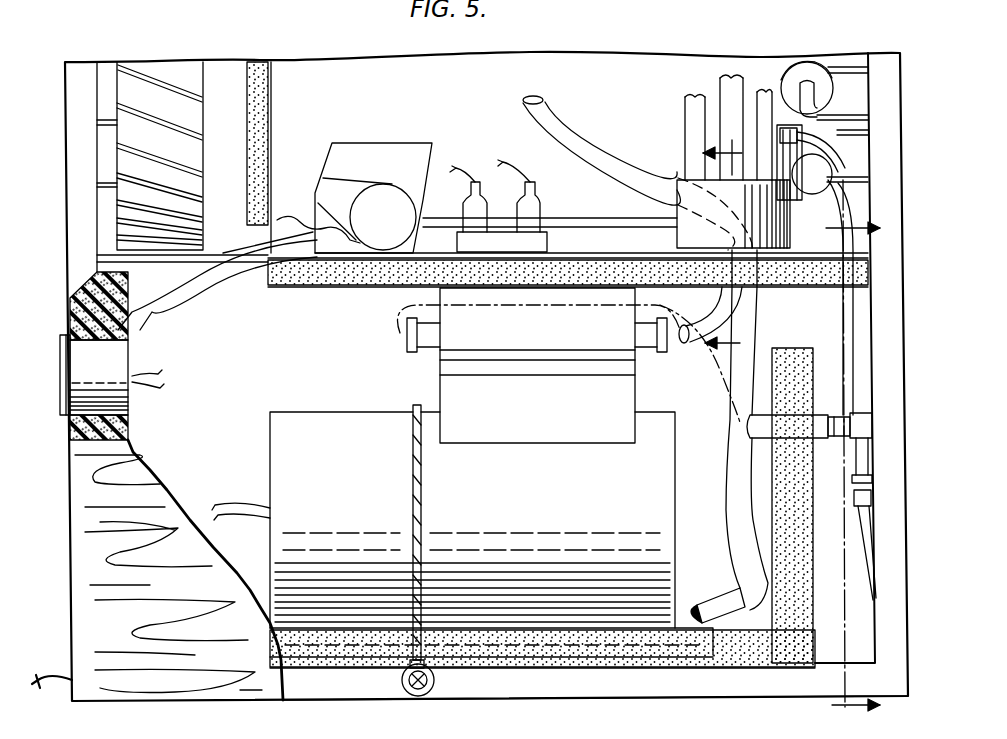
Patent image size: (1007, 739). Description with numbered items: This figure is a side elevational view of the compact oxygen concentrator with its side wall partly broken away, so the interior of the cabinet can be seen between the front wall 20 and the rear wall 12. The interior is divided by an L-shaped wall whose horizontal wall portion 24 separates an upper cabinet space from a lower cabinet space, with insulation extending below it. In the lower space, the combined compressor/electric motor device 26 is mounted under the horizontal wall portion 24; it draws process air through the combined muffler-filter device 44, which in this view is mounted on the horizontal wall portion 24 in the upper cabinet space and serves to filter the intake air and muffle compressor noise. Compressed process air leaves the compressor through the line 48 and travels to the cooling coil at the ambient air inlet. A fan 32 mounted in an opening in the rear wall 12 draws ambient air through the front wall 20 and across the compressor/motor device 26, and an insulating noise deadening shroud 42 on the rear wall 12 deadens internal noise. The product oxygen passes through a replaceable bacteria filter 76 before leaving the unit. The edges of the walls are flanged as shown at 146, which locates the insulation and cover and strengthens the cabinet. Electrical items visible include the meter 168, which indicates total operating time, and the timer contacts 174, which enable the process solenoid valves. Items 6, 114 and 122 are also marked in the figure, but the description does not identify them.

The front wall 20 is at (892, 128).
The fan 32 is at (122, 135).
The insulating noise deadening shroud 42 is at (271, 100).
The timer contacts 174 is at (408, 150).
The combined muffler-filter device 44 is at (672, 168).
The bacteria filter 76 is at (790, 82).
The horizontal wall portion 24 is at (815, 288).
The line 48 is at (763, 428).
The rear wall 12 is at (860, 456).
The section line 6 is at (716, 255).
The combined compressor/electric motor device 26 is at (428, 399).
The flanges 146 is at (537, 685).
The meter 168 is at (118, 358).
The ground 114 is at (286, 738).
The bottom plate 122 is at (429, 736).